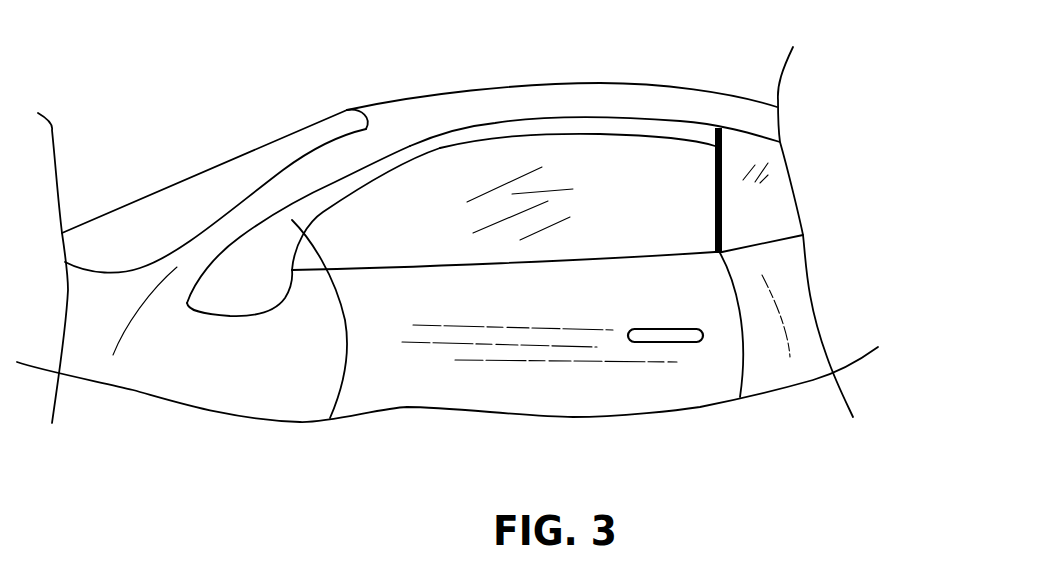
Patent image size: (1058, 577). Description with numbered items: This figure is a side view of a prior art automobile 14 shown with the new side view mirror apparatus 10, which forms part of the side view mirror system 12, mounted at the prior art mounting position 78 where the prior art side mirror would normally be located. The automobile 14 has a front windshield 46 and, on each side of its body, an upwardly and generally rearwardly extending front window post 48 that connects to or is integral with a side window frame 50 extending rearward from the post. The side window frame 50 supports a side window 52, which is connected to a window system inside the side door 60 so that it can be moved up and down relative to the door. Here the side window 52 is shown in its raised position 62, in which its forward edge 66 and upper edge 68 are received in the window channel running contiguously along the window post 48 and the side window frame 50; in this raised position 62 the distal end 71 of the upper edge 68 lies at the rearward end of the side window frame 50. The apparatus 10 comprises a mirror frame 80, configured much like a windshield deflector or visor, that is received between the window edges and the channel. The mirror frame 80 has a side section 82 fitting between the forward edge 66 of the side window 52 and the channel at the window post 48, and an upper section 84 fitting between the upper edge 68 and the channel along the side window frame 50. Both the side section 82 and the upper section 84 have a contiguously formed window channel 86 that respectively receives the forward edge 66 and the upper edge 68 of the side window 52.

The side view mirror apparatus 10 is at (243, 282).
The side view mirror system 12 is at (850, 85).
The automobile 14 is at (358, 82).
The front windshield 46 is at (140, 215).
The front window post 48 is at (250, 215).
The side window frame 50 is at (495, 125).
The side window 52 is at (640, 207).
The side door 60 is at (652, 395).
The raised position 62 is at (705, 118).
The forward edge 66 is at (323, 212).
The upper edge 68 is at (600, 133).
The distal end 71 is at (706, 158).
The prior art mounting position 78 is at (200, 318).
The mirror frame 80 is at (336, 180).
The side section 82 is at (330, 418).
The upper section 84 is at (555, 128).
The window channel 86 is at (478, 147).